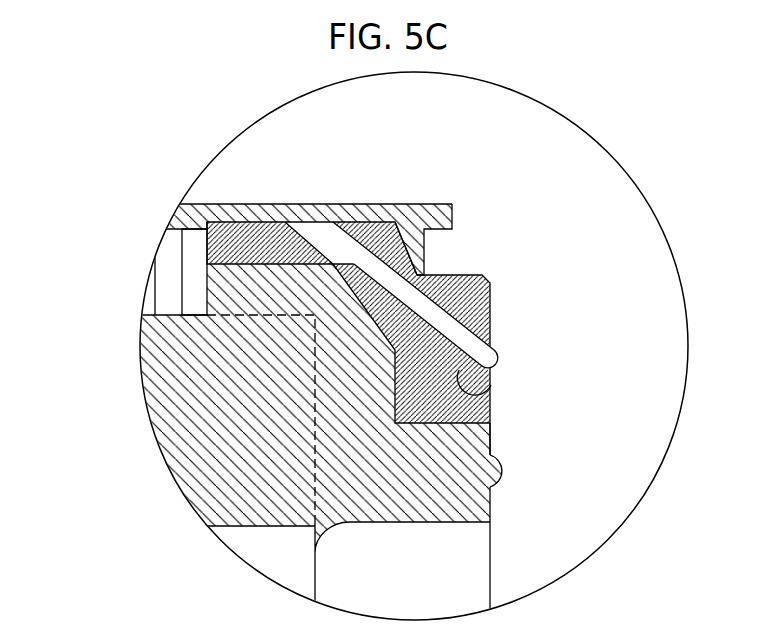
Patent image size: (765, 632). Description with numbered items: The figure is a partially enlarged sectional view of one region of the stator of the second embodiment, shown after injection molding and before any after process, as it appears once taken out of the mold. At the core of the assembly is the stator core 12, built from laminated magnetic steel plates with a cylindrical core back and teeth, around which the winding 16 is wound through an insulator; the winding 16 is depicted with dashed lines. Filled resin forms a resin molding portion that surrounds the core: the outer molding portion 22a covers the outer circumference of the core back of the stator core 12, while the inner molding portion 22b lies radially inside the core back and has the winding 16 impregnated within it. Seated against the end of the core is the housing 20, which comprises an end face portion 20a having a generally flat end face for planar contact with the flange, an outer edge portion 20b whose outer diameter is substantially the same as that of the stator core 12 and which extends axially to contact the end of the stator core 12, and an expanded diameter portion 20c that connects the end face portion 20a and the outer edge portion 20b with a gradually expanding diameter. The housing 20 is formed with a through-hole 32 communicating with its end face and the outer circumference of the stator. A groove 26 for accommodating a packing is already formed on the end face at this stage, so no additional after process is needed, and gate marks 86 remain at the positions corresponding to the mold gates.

The stator core 12 is at (183, 263).
The winding 16 is at (310, 453).
The housing 20 is at (466, 399).
The end face portion 20a is at (495, 305).
The outer edge portion 20b is at (228, 228).
The expanded diameter portion 20c is at (377, 235).
The outer molding portion 22a is at (256, 212).
The inner molding portion 22b is at (200, 410).
The groove 26 is at (453, 248).
The through-hole 32 is at (492, 390).
The gate marks 86 is at (493, 353).